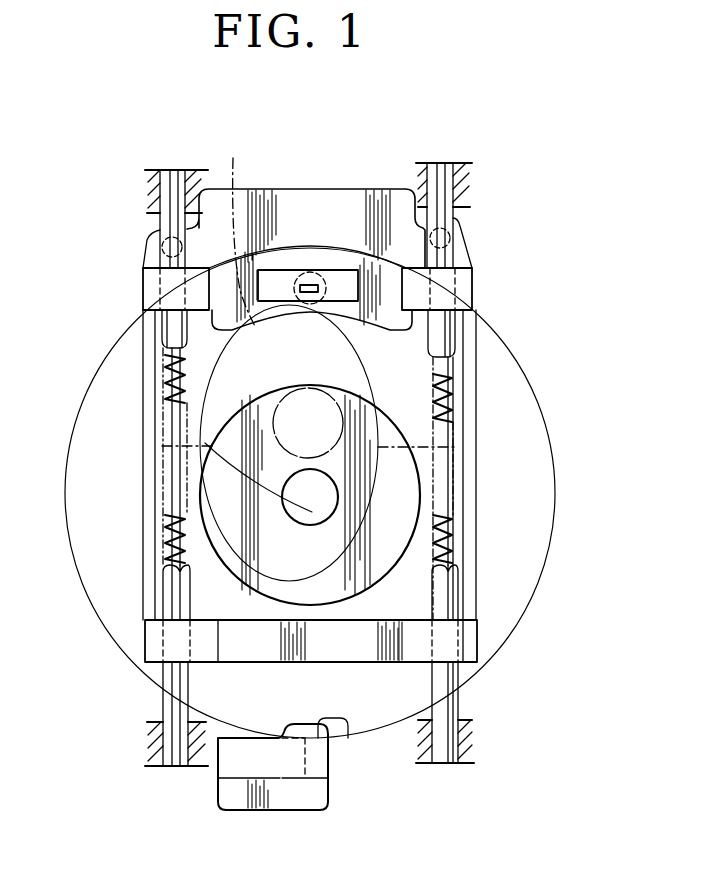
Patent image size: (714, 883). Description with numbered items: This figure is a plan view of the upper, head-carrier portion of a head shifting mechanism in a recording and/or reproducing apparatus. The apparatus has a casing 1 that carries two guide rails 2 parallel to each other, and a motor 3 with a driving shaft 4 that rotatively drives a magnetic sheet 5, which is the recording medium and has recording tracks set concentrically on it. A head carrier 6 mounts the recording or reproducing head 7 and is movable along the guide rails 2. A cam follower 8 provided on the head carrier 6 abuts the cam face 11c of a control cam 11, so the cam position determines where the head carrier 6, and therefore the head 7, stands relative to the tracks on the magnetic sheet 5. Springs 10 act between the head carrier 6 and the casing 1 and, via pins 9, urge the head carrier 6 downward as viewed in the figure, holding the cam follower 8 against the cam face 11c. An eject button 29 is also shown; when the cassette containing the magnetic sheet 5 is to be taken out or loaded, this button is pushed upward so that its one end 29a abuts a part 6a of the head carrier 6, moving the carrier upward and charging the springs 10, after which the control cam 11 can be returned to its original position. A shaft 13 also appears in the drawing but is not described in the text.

The casing 1 is at (148, 195).
The guide rails 2 is at (165, 333).
The motor 3 is at (203, 497).
The driving shaft 4 is at (327, 510).
The magnetic sheet 5 is at (535, 605).
The head carrier 6 is at (352, 190).
The part of the head carrier 6a is at (403, 664).
The recording or reproducing head 7 is at (309, 285).
The cam follower 8 is at (291, 284).
The pins 9 is at (162, 255).
The springs 10 is at (165, 372).
The control cam 11 is at (185, 443).
The cam face 11c is at (237, 226).
The shaft 13 is at (337, 430).
The eject button 29 is at (285, 800).
The one end of the eject button 29a is at (345, 740).